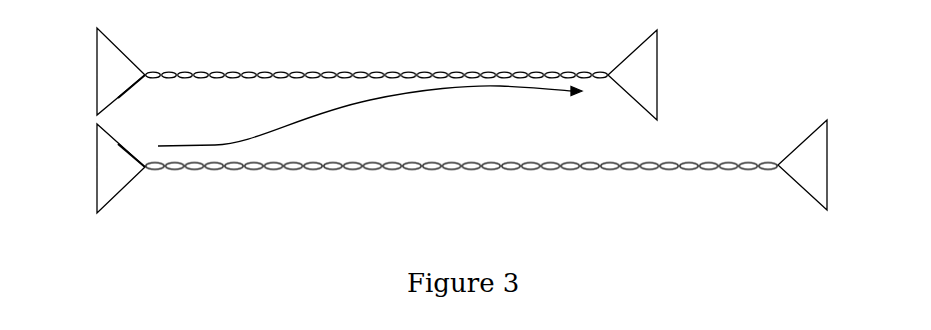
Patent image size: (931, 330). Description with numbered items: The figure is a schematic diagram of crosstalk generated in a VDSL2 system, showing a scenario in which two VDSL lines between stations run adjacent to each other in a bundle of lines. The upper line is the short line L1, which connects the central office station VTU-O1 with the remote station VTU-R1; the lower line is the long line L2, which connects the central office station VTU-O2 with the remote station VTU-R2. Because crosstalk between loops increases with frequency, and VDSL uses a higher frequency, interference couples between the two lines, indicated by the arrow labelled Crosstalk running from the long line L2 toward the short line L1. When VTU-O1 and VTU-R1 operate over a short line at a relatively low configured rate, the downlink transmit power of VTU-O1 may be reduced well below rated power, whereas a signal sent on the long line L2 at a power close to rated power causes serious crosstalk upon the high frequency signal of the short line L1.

The central office communication station of the first line VTU-O1 is at (91, 71).
The central office communication station of the second line VTU-O2 is at (91, 168).
The remote side communication station of the first line VTU-R1 is at (657, 75).
The remote side communication station of the second line VTU-R2 is at (827, 165).
The short line L1 is at (376, 58).
The long line L2 is at (461, 151).
The crosstalk Crosstalk is at (370, 116).